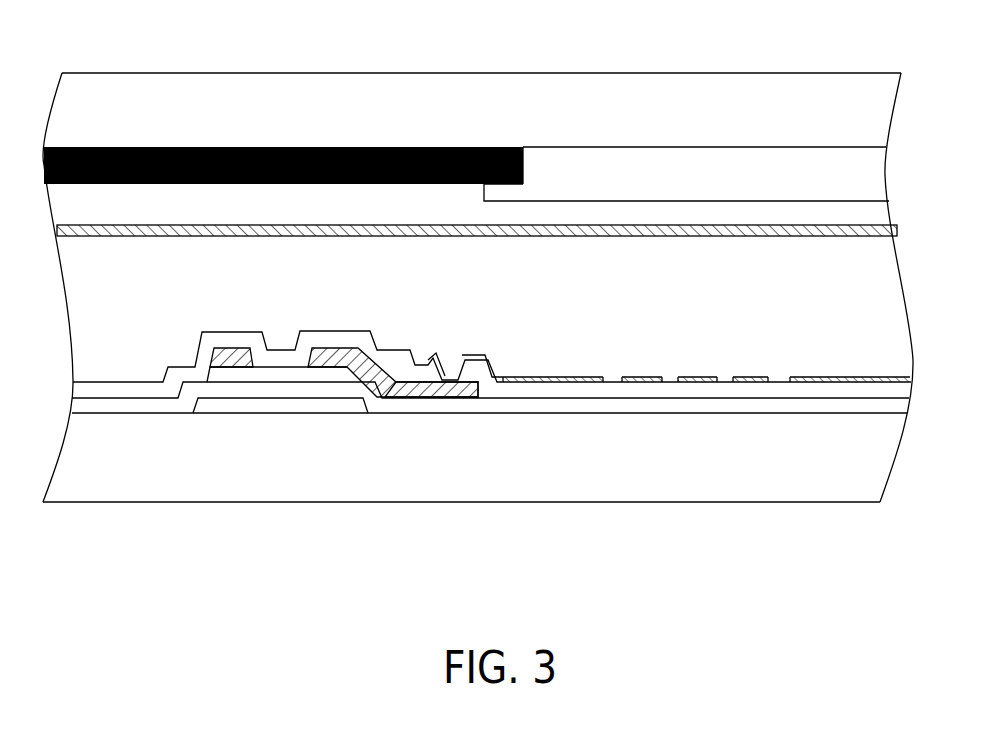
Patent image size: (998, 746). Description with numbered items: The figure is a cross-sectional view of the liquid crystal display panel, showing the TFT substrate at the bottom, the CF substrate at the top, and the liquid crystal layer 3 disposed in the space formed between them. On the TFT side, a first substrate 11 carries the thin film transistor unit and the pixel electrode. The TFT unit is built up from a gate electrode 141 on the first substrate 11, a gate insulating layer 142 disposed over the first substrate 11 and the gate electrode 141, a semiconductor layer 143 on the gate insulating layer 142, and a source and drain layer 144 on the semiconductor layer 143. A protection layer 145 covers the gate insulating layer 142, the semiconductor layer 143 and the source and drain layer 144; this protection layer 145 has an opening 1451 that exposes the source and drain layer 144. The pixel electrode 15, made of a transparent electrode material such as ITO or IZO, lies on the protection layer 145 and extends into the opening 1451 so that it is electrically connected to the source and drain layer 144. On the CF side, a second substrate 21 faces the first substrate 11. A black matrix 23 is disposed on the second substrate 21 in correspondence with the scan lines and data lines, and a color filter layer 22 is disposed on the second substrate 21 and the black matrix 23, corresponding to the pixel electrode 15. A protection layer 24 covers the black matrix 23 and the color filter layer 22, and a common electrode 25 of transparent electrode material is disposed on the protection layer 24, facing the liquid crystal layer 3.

The liquid crystal layer 3 is at (880, 302).
The first substrate 11 is at (872, 458).
The pixel electrode 15 is at (885, 377).
The second substrate 21 is at (872, 119).
The color filter layer 22 is at (866, 168).
The black matrix 23 is at (207, 147).
The protection layer 24 is at (870, 212).
The common electrode 25 is at (873, 228).
The gate electrode 141 is at (290, 405).
The gate insulating layer 142 is at (873, 405).
The semiconductor layer 143 is at (227, 375).
The source and drain layer 144 is at (453, 390).
The protection layer 145 is at (876, 392).
The opening 1451 is at (410, 382).